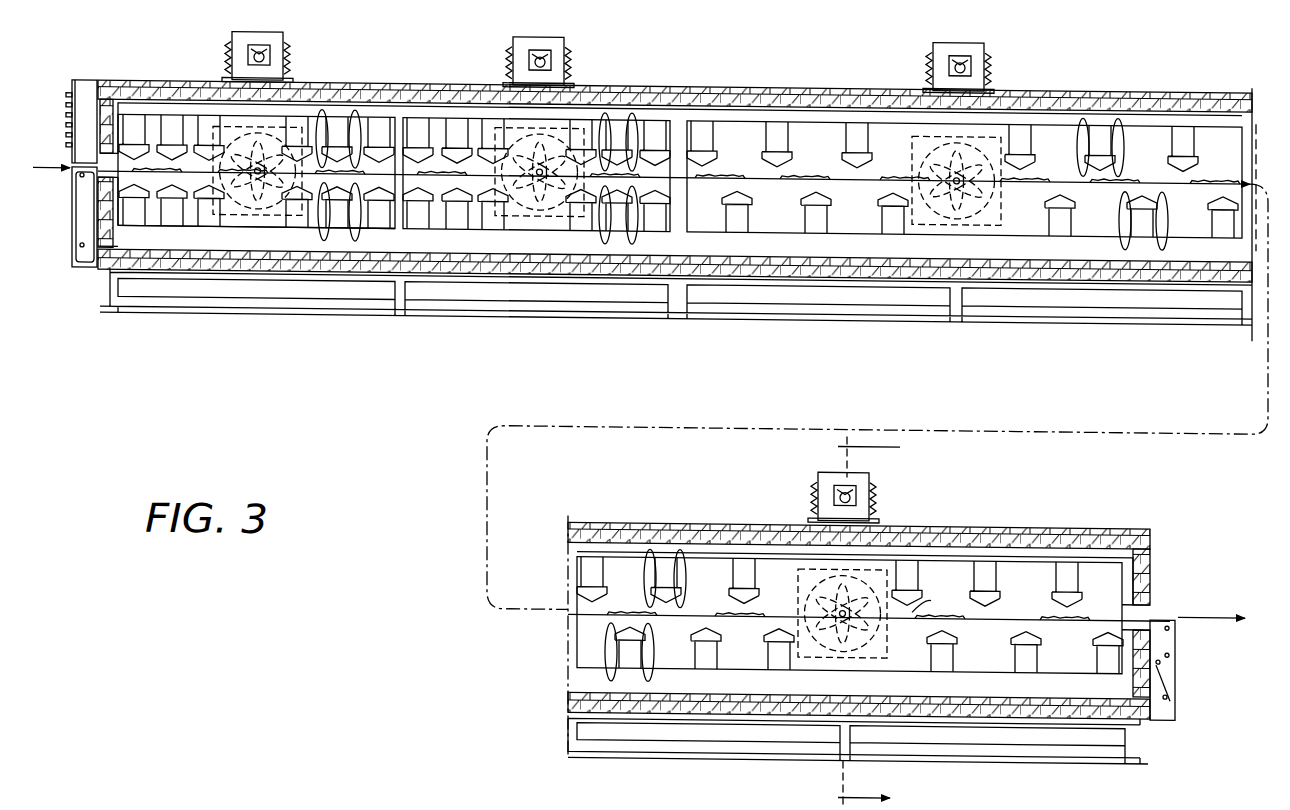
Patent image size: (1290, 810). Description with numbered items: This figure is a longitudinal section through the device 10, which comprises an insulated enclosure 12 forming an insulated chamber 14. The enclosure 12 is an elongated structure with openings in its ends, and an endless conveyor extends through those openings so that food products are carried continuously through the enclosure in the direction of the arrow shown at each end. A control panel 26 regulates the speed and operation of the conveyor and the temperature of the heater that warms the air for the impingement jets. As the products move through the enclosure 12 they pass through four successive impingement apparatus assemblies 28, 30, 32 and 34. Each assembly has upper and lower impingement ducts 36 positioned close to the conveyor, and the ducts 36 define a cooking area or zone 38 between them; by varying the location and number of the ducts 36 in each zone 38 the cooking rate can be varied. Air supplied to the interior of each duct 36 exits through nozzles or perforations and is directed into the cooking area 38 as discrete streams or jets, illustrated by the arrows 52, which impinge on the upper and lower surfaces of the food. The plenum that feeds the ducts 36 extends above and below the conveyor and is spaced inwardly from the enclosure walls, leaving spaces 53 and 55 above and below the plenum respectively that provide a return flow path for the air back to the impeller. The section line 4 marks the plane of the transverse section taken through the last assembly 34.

The section line 4- 4 is at (857, 617).
The device 10 is at (744, 44).
The insulated enclosure 12 is at (680, 78).
The chamber 14 is at (150, 100).
The control panel 26 is at (85, 78).
The impingement apparatus assembly 28 is at (378, 112).
The impingement apparatus assembly 30 is at (576, 112).
The impingement apparatus assembly 32 is at (1046, 118).
The impingement apparatus assembly 34 is at (1025, 550).
The impingement ducts 36 is at (173, 218).
The cooking area or zone 38 is at (182, 180).
The arrows 52 is at (932, 580).
The space 53 is at (257, 107).
The space 55 is at (263, 234).